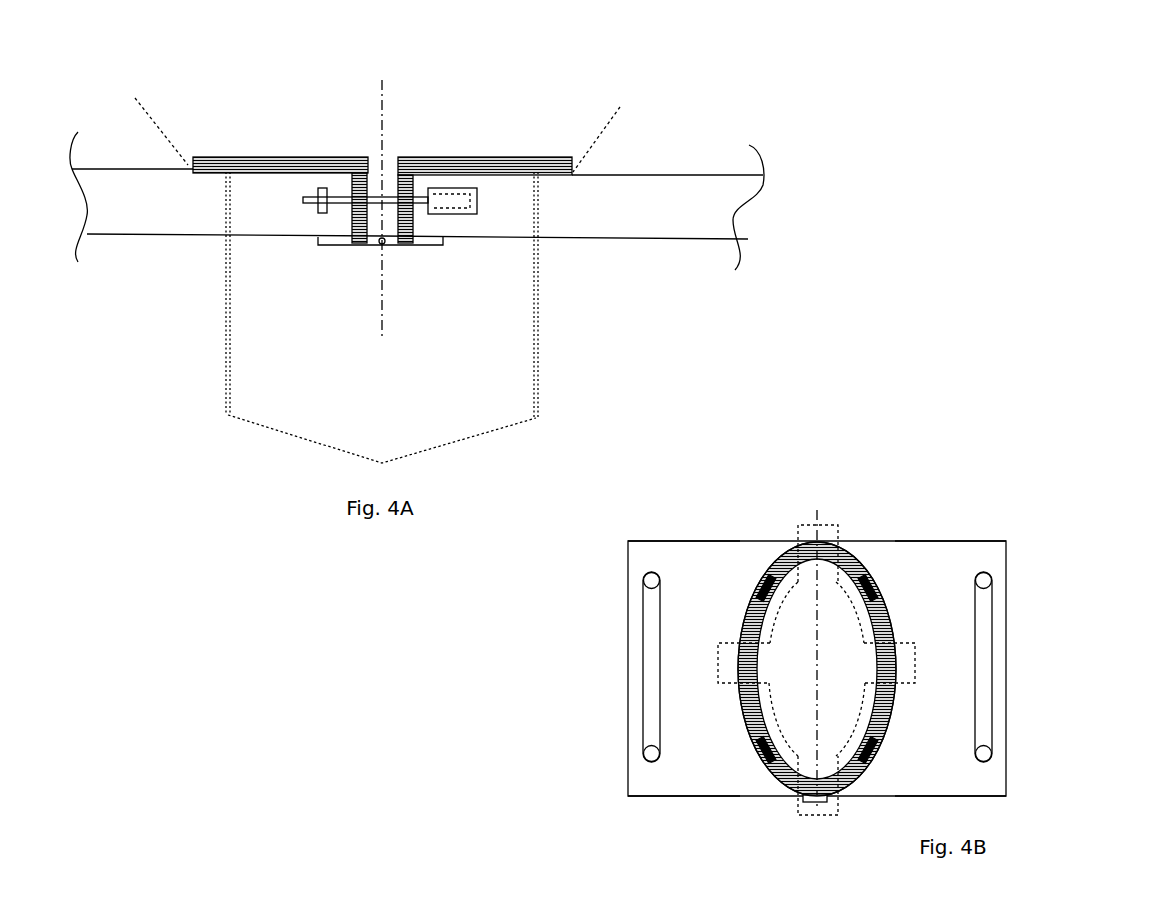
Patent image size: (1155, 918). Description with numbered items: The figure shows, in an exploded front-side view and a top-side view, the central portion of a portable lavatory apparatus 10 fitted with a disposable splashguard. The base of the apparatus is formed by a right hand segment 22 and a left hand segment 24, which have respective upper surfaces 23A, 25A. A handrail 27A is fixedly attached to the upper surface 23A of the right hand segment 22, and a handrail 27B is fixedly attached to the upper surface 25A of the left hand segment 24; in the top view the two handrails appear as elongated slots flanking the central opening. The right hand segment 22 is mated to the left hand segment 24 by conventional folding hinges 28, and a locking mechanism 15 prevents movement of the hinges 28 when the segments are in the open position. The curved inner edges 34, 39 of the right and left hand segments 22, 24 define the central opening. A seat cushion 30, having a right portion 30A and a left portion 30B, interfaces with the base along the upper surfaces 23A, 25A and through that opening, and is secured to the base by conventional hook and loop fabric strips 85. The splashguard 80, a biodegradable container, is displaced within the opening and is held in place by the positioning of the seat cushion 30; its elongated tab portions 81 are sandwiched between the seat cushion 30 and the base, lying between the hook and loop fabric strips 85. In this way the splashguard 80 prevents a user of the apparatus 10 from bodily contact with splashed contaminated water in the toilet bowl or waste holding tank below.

In FIG. 4B, the portable lavatory apparatus 10 is at (999, 425).
In FIG. 4A, the locking mechanism 15 is at (323, 188).
In FIG. 4A, the right hand segment 22 is at (475, 220).
In FIG. 4B, the right hand segment 22 is at (1017, 674).
In FIG. 4A, the upper surface 23A is at (708, 173).
In FIG. 4B, the upper surface 23A is at (952, 565).
In FIG. 4A, the left hand segment 24 is at (287, 217).
In FIG. 4B, the left hand segment 24 is at (613, 675).
In FIG. 4A, the upper surface 25A is at (110, 165).
In FIG. 4B, the upper surface 25A is at (692, 567).
In FIG. 4B, the handrail 27A is at (982, 638).
In FIG. 4B, the handrail 27B is at (652, 635).
In FIG. 4A, the folding hinges 28 is at (428, 246).
In FIG. 4B, the seat cushion 30 is at (856, 560).
In FIG. 4A, the right portion 30A is at (508, 158).
In FIG. 4B, the right portion 30A is at (893, 717).
In FIG. 4A, the left portion 30B is at (260, 157).
In FIG. 4B, the left portion 30B is at (738, 705).
In FIG. 4A, the inner edge 34 is at (538, 205).
In FIG. 4A, the inner edge 39 is at (220, 203).
In FIG. 4A, the splashguard 80 is at (227, 380).
In FIG. 4A, the elongated tab portions 81 is at (615, 120).
In FIG. 4B, the elongated tab portions 81 is at (812, 522).
In FIG. 4B, the hook and loop fabric strips 85 is at (758, 755).